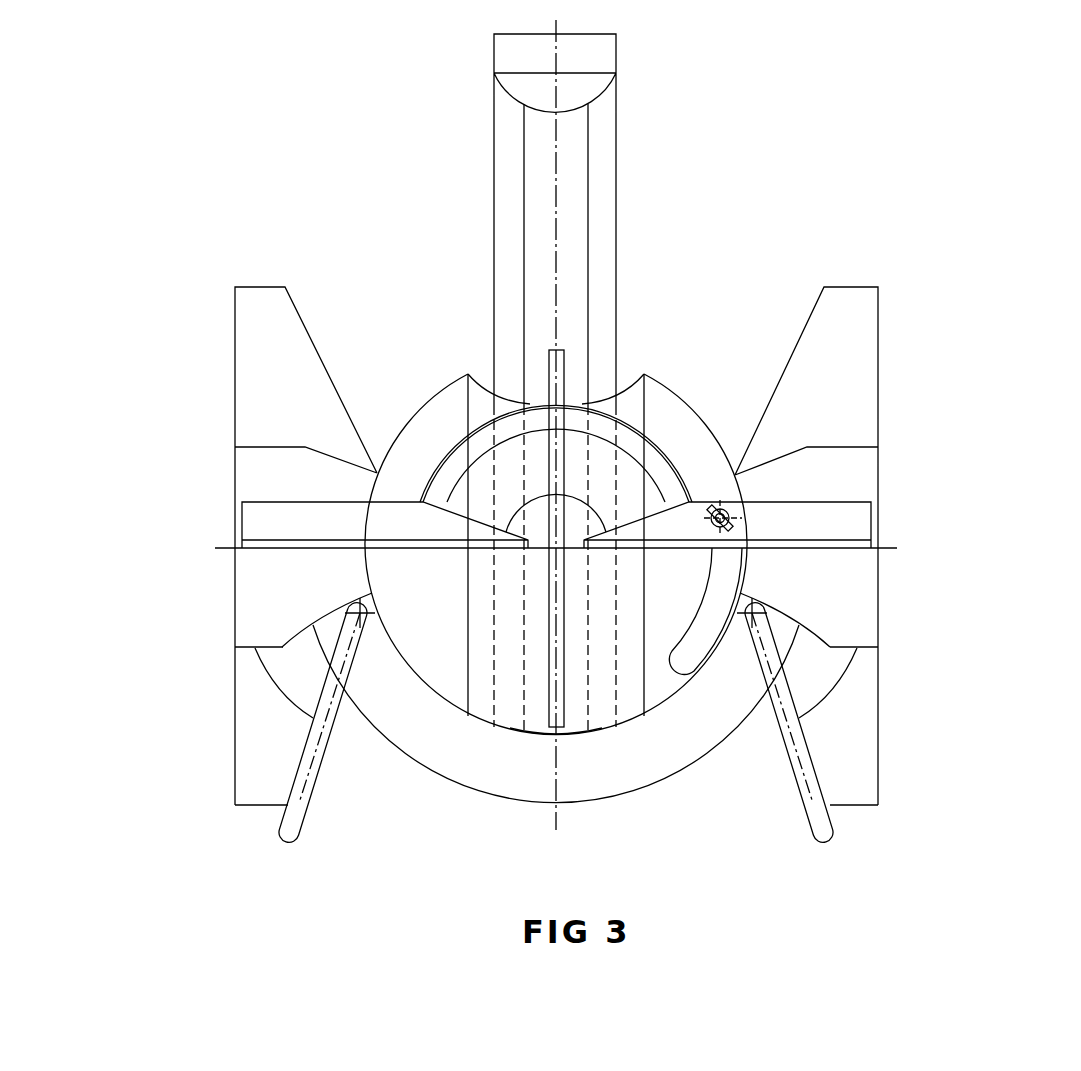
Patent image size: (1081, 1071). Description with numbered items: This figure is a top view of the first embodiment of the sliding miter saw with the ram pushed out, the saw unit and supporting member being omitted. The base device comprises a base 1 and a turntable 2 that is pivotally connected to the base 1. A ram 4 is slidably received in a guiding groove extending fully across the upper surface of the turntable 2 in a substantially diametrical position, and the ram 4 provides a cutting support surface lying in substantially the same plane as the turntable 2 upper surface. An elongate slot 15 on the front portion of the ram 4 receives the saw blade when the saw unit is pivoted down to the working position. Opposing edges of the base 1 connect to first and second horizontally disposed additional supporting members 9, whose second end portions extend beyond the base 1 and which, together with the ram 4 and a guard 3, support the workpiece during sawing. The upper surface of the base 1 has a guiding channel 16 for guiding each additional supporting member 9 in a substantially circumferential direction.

The base 1 is at (855, 777).
The turntable 2 is at (700, 742).
The guard 3 is at (280, 517).
The ram 4 is at (596, 248).
The additional supporting member 9 is at (320, 725).
The elongate slot 15 is at (557, 688).
The guiding channel 16 is at (253, 667).